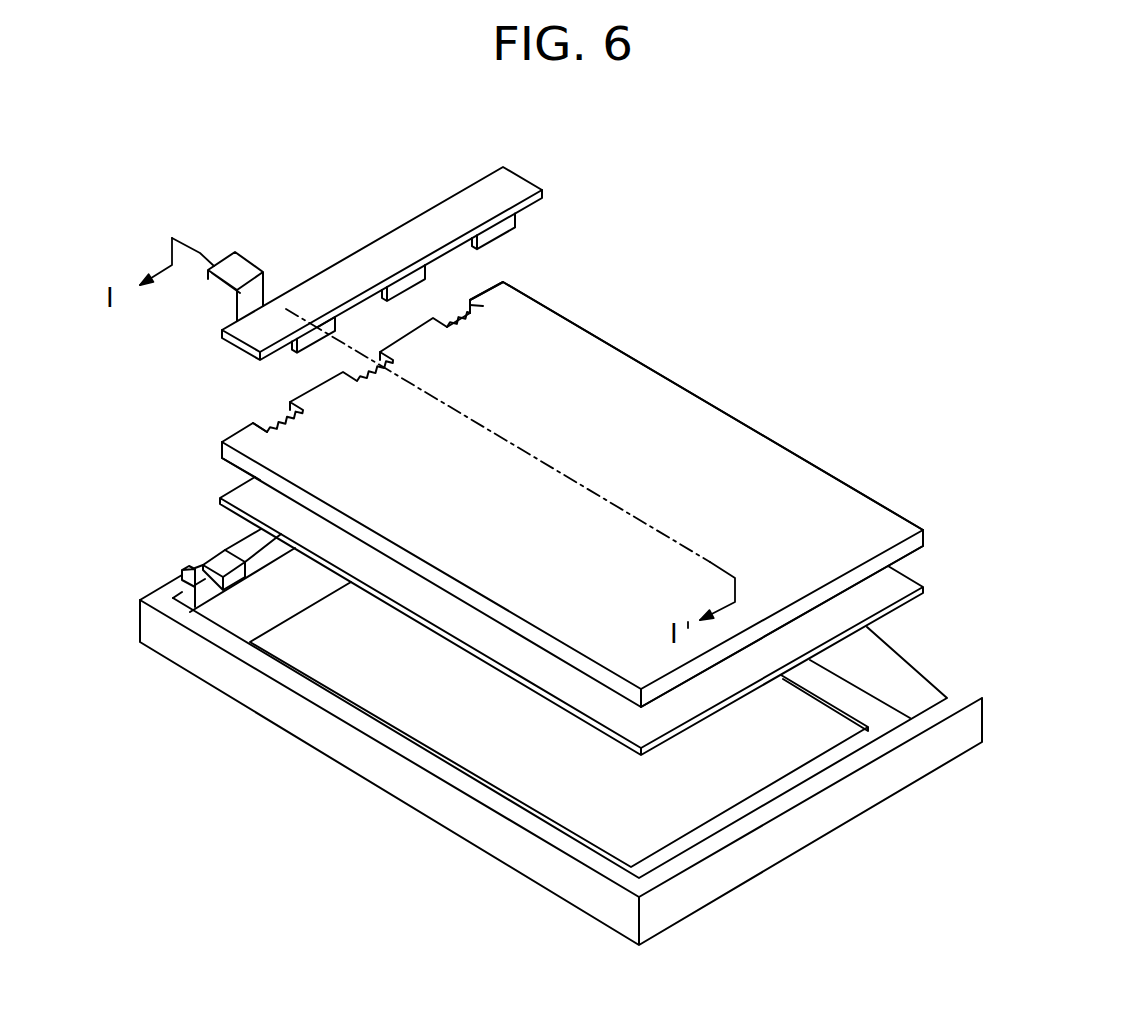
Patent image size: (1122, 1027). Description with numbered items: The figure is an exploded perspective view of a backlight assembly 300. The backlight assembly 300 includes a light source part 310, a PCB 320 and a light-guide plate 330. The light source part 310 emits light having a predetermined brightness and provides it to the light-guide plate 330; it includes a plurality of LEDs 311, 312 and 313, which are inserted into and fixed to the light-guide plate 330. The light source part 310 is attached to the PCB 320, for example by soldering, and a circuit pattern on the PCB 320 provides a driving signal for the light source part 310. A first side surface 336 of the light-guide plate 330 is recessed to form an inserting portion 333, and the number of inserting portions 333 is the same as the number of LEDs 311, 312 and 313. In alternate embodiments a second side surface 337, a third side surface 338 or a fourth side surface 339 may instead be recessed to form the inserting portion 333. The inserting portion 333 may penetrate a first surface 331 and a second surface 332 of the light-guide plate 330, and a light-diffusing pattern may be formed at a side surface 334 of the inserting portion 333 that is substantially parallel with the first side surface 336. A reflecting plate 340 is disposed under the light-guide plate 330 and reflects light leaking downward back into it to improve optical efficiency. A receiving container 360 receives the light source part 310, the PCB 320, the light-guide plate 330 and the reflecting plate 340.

The backlight assembly 300 is at (567, 102).
The light source part 310 is at (479, 111).
The LED 311 is at (498, 217).
The LED 312 is at (407, 268).
The LED 313 is at (330, 333).
The PCB 320 is at (252, 337).
The light-guide plate 330 is at (942, 518).
The first surface 331 is at (912, 570).
The second surface 332 is at (723, 430).
The inserting portion 333 is at (272, 417).
The side surface of the inserting portion 334 is at (468, 316).
The first side surface 336 is at (478, 292).
The second side surface 337 is at (925, 547).
The third side surface 338 is at (238, 460).
The fourth side surface 339 is at (823, 470).
The reflecting plate 340 is at (872, 600).
The receiving container 360 is at (1008, 695).